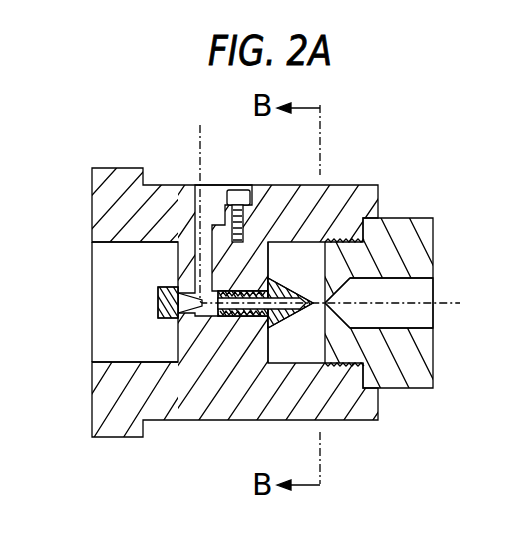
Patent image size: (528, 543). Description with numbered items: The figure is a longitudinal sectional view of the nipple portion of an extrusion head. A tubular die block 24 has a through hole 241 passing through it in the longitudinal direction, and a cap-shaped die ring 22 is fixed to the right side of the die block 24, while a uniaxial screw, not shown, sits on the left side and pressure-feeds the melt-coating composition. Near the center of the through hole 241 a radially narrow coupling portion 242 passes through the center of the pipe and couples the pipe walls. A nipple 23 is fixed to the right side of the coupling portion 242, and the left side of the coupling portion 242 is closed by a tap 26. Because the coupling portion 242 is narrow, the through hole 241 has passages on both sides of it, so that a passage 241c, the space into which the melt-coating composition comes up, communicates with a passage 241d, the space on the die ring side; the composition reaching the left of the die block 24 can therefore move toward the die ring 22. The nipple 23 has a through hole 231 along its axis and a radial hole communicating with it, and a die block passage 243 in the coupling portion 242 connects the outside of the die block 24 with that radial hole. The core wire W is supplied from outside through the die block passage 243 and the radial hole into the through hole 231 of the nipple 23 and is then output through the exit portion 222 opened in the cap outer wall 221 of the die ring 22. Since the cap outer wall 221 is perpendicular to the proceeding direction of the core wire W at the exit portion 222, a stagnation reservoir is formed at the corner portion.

The die block 24 is at (338, 426).
The through hole 241 is at (160, 360).
The passage 241c is at (102, 315).
The passage 241d is at (295, 258).
The coupling portion 242 is at (178, 277).
The tap 26 is at (158, 303).
The nipple 23 is at (316, 306).
The through hole 231 is at (238, 316).
The die ring 22 is at (417, 388).
The cap outer wall 221 is at (322, 258).
The exit portion 222 is at (352, 318).
The die block passage 243 is at (203, 240).
The core wire W is at (192, 128).